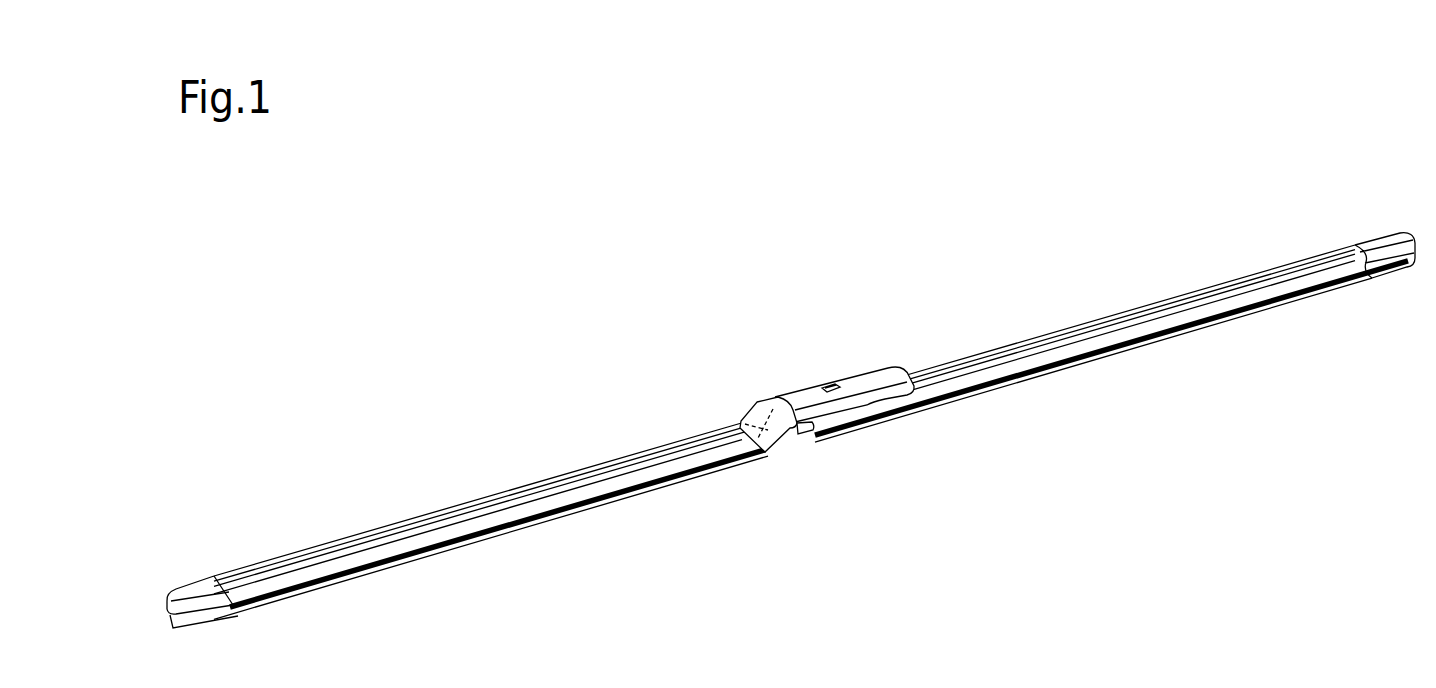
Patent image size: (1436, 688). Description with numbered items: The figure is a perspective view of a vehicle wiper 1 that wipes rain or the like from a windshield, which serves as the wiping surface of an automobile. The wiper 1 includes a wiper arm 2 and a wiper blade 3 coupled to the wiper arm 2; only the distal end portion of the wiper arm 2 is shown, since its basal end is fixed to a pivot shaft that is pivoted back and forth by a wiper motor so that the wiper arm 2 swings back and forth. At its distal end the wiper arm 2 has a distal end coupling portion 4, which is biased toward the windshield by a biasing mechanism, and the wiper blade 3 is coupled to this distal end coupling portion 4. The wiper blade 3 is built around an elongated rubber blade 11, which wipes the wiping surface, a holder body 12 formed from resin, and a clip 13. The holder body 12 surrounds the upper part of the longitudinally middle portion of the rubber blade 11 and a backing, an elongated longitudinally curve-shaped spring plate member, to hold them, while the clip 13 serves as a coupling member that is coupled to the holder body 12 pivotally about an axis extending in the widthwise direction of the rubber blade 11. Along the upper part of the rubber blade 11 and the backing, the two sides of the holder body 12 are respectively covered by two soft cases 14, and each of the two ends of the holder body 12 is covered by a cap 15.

The vehicle wiper 1 is at (520, 204).
The wiper arm 2 is at (888, 367).
The wiper blade 3 is at (629, 443).
The distal end coupling portion 4 is at (801, 393).
The rubber blade 11 is at (507, 530).
The holder body 12 is at (760, 412).
The clip 13 is at (797, 440).
The soft case 14 is at (425, 513).
The cap 15 is at (188, 585).